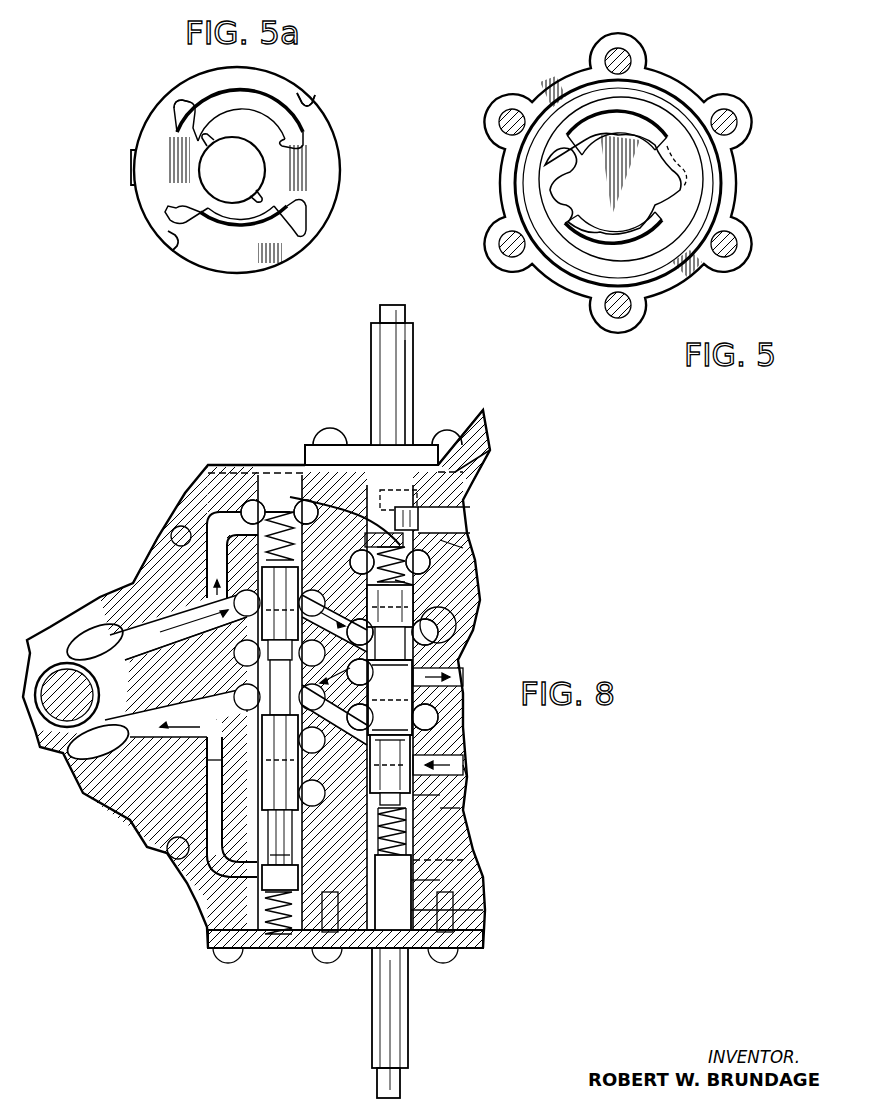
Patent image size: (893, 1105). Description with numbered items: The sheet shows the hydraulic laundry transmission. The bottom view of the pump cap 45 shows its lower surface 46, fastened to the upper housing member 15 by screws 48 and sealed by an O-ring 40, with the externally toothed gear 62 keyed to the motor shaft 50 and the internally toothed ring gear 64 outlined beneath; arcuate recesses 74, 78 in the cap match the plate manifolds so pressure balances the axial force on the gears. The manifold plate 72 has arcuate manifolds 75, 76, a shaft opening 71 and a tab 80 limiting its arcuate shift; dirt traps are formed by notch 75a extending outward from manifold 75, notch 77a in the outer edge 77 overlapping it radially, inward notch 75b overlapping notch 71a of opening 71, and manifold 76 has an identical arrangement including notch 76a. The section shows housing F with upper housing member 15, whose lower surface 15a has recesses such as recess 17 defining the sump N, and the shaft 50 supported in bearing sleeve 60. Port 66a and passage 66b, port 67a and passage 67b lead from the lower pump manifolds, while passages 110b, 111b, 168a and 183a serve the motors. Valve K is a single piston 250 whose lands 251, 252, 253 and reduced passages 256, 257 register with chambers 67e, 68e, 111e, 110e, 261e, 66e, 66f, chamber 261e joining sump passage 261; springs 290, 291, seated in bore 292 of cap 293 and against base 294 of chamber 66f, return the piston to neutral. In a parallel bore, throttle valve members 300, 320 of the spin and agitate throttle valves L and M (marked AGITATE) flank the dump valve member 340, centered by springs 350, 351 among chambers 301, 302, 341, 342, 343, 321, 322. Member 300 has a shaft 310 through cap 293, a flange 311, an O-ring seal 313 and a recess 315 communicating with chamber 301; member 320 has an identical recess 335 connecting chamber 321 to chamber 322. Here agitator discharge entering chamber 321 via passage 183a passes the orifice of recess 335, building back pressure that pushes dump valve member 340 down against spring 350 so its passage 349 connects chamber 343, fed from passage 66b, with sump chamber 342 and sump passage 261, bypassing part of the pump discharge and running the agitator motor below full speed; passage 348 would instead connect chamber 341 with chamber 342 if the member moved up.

In FIG. 5A, the manifold plate 72 is at (335, 164).
In FIG. 5A, the outer edge 77 is at (340, 205).
In FIG. 5A, the notch 77a is at (309, 100).
In FIG. 5A, the tab 80 is at (126, 170).
In FIG. 5A, the arcuate manifold 75 is at (228, 112).
In FIG. 5A, the notch 75a is at (172, 124).
In FIG. 5A, the notch 75b is at (292, 142).
In FIG. 5A, the arcuate manifold 76 is at (250, 245).
In FIG. 5A, the segment end notch 76a is at (304, 232).
In FIG. 5A, the shaft opening 71 is at (222, 190).
In FIG. 5A, the notch 71a is at (202, 138).
In FIG. 5, the lower surface 46 is at (735, 200).
In FIG. 5, the screws 48 is at (738, 247).
In FIG. 5, the O-ring 40 is at (680, 268).
In FIG. 5, the cap 45 is at (740, 172).
In FIG. 5, the arcuate recess 74 is at (628, 123).
In FIG. 5, the arcuate recess 78 is at (592, 248).
In FIG. 5, the externally toothed gear 62 is at (676, 198).
In FIG. 5, the internally toothed ring gear 64 is at (684, 170).
In FIG. 8, the upper housing member 15 is at (150, 552).
In FIG. 8, the lower surface 15a is at (125, 580).
In FIG. 8, the recess 17 is at (486, 466).
In FIG. 8, the throttle valve member 320 is at (460, 418).
In FIG. 8, the sump N is at (490, 455).
In FIG. 8, the bearing sleeve 60 is at (45, 670).
In FIG. 8, the shaft 50 is at (70, 722).
In FIG. 8, the port 66a is at (90, 632).
In FIG. 8, the passage 66b is at (150, 632).
In FIG. 8, the valve chamber 261e is at (230, 622).
In FIG. 8, the land 253 is at (212, 596).
In FIG. 8, the valve chamber 66e is at (205, 532).
In FIG. 8, the valve chamber 66f is at (235, 505).
In FIG. 8, the passage 67b is at (185, 712).
In FIG. 8, the valve chamber 111e is at (170, 726).
In FIG. 8, the valve chamber 110e is at (240, 692).
In FIG. 8, the valve passage 256 is at (232, 672).
In FIG. 8, the port 67a is at (92, 768).
In FIG. 8, the valve piston 250 is at (185, 780).
In FIG. 8, the land 252 is at (205, 790).
In FIG. 8, the valve chamber 68e is at (218, 810).
In FIG. 8, the valve chamber 67e is at (225, 878).
In FIG. 8, the land 251 is at (245, 890).
In FIG. 8, the cap 293 is at (212, 948).
In FIG. 8, the bore 292 is at (290, 948).
In FIG. 8, the helical coil spring 290 is at (282, 948).
In FIG. 8, the helical coil spring 291 is at (278, 510).
In FIG. 8, the base 294 is at (308, 500).
In FIG. 8, the valve passage 257 is at (290, 838).
In FIG. 8, the valve K is at (295, 856).
In FIG. 8, the sump passage 261 is at (546, 661).
In FIG. 8, the helical spring 351 is at (385, 500).
In FIG. 8, the valve chamber 322 is at (440, 515).
In FIG. 8, the recess 335 is at (462, 528).
In FIG. 8, the valve chamber 321 is at (440, 555).
In FIG. 8, the passage 183a is at (470, 575).
In FIG. 8, the valve passage 349 is at (455, 588).
In FIG. 8, the valve chamber 343 is at (458, 608).
In FIG. 8, the passage 168a is at (456, 625).
In FIG. 8, the valve chamber 342 is at (458, 660).
In FIG. 8, the dump valve member 340 is at (430, 722).
In FIG. 8, the passage 110b is at (440, 700).
In FIG. 8, the valve chamber 341 is at (425, 745).
In FIG. 8, the valve passage 348 is at (462, 765).
In FIG. 8, the passage 111b is at (470, 778).
In FIG. 8, the valve chamber 302 is at (440, 805).
In FIG. 8, the housing F is at (475, 805).
In FIG. 8, the helical spring 350 is at (440, 830).
In FIG. 8, the recess 315 is at (420, 840).
In FIG. 8, the valve chamber 301 is at (440, 870).
In FIG. 8, the throttle valve member 300 is at (430, 885).
In FIG. 8, the O-ring seal 313 is at (440, 900).
In FIG. 8, the flange 311 is at (470, 938).
In FIG. 8, the throttle valve M is at (367, 358).
In FIG. 8, the agitate shaft AGITATE is at (406, 392).
In FIG. 8, the throttle valve L is at (412, 1005).
In FIG. 8, the shaft 310 is at (392, 1048).